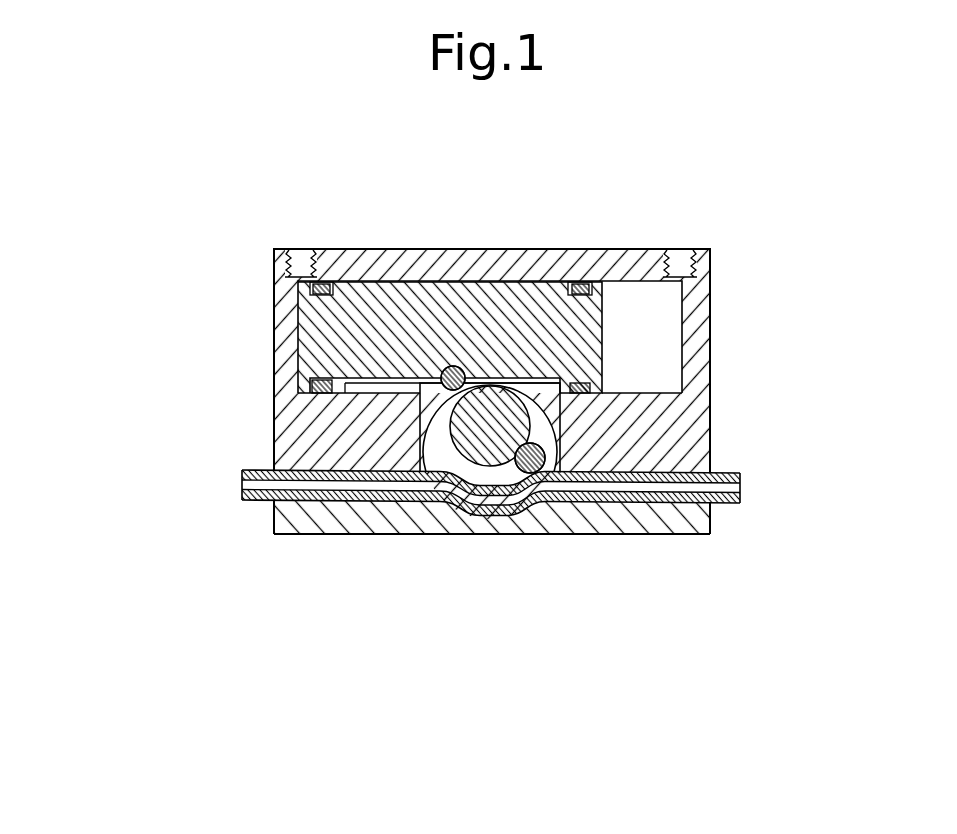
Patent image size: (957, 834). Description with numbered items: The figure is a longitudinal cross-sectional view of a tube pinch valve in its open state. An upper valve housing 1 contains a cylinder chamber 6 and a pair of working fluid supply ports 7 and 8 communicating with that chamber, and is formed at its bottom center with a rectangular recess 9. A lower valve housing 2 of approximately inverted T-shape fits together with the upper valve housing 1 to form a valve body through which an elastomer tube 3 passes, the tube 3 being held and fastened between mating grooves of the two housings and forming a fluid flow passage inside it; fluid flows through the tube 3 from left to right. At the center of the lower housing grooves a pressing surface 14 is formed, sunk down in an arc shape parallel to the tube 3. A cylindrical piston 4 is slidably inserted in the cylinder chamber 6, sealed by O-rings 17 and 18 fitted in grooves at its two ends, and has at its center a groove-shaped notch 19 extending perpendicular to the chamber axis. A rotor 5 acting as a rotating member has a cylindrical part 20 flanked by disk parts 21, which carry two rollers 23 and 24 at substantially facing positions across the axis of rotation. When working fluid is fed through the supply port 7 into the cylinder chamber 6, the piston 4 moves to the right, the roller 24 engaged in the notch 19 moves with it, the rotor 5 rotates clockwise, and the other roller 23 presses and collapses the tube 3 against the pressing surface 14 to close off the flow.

The upper valve housing 1 is at (695, 337).
The lower valve housing 2 is at (298, 520).
The elastomer tube 3 is at (728, 473).
The cylindrical piston 4 is at (452, 323).
The rotor 5 is at (467, 464).
The cylinder chamber 6 is at (627, 292).
The working fluid supply port 7 is at (302, 258).
The working fluid supply port 8 is at (687, 253).
The recess 9 is at (610, 530).
The pressing surface 14 is at (507, 487).
The O-ring 17 is at (320, 282).
The O-ring 18 is at (578, 283).
The notch 19 is at (445, 365).
The cylindrical part 20 is at (487, 443).
The disk part 21 is at (500, 468).
The roller 23 is at (540, 473).
The roller 24 is at (425, 393).